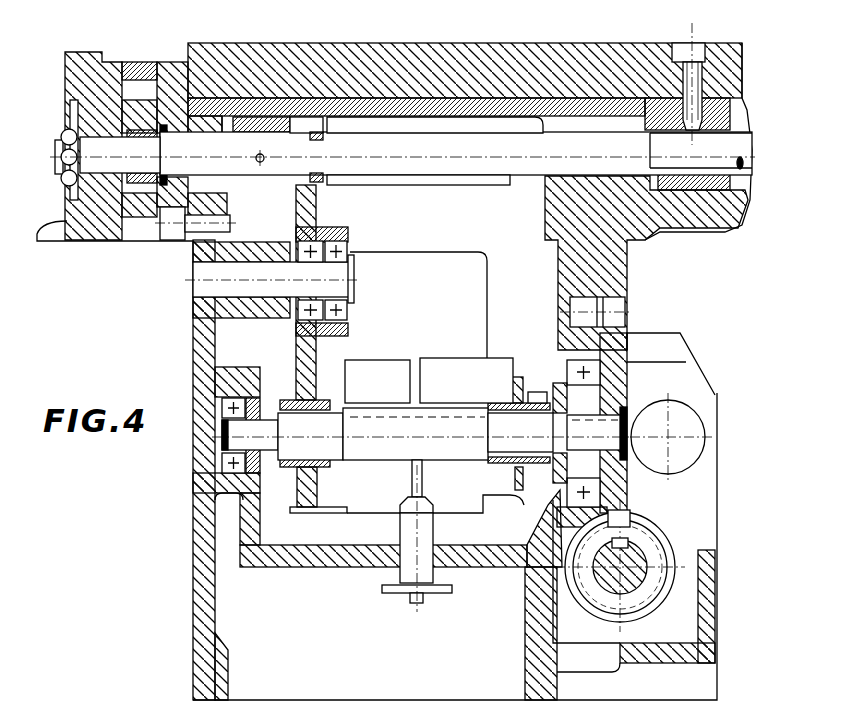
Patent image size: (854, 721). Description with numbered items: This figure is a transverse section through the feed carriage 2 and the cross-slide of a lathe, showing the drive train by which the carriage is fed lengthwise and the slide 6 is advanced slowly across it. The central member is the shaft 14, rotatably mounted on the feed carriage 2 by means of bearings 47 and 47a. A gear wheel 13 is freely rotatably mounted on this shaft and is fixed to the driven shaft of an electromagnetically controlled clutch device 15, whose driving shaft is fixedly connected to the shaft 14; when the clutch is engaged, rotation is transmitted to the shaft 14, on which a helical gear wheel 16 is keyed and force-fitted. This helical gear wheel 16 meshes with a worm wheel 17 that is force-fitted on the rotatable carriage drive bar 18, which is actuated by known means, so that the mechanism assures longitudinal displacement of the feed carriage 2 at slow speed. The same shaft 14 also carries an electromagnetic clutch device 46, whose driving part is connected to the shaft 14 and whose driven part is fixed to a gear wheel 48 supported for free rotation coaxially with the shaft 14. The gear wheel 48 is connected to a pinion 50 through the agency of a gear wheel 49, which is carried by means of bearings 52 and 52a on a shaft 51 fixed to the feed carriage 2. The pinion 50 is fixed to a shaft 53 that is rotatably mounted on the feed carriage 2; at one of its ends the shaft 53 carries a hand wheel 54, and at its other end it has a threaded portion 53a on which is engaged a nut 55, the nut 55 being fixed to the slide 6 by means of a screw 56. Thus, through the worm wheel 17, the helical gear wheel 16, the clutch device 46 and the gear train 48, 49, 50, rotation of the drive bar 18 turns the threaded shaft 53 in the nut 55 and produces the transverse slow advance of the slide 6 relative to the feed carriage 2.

The feed carriage 2 is at (212, 660).
The slide 6 is at (507, 78).
The gear wheel 13 is at (537, 394).
The shaft 14 is at (360, 443).
The electromagnetically controlled clutch device 15 is at (498, 373).
The helical gear wheel 16 is at (686, 362).
The worm wheel 17 is at (645, 528).
The carriage drive bar 18 is at (632, 580).
The electromagnetic clutch device 46 is at (398, 377).
The bearing 47 is at (588, 367).
The bearing 47a is at (222, 395).
The gear wheel 48 is at (308, 493).
The gear wheel 49 is at (310, 209).
The pinion 50 is at (302, 130).
The shaft 51 is at (200, 287).
The bearing 52 is at (305, 243).
The bearing 52a is at (348, 238).
The shaft 53 is at (633, 147).
The threaded portion 53a is at (710, 172).
The hand wheel 54 is at (92, 257).
The nut 55 is at (672, 192).
The screw 56 is at (697, 42).